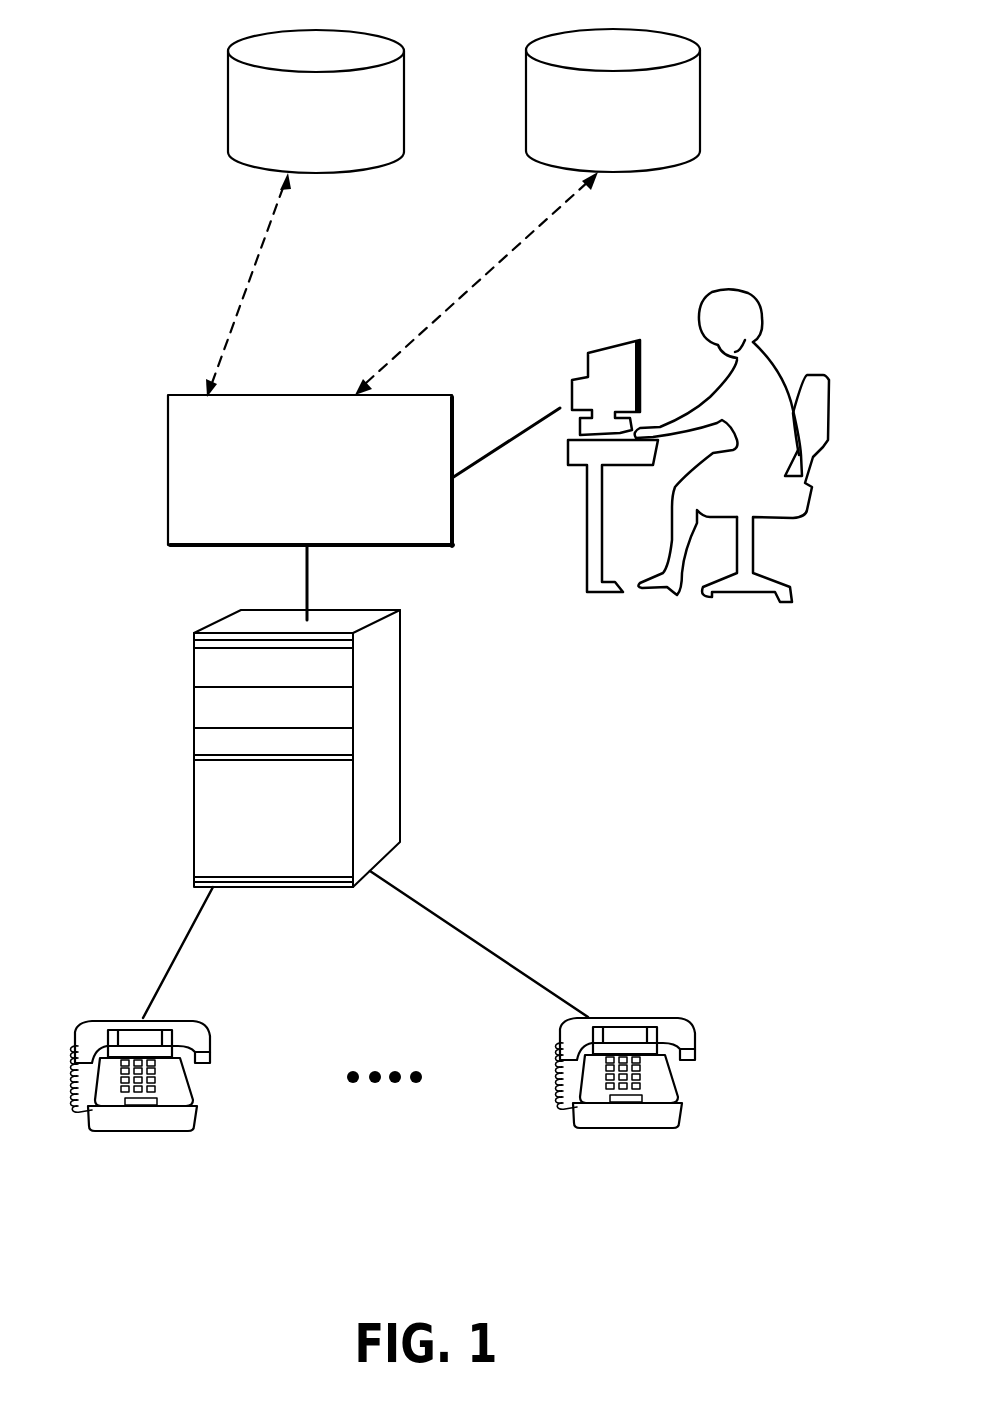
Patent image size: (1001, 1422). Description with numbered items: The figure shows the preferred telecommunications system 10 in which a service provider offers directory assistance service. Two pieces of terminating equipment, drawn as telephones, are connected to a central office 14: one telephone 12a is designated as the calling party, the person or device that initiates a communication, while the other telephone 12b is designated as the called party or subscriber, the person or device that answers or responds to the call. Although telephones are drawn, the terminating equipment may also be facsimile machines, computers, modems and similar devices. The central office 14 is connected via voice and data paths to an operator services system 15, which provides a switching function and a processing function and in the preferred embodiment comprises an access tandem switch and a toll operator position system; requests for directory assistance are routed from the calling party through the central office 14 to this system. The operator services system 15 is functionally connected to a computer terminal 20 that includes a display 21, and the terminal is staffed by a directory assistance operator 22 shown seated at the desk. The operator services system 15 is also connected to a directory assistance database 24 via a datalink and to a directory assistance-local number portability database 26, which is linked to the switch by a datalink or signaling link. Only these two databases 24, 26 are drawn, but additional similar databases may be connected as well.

The telecommunications system 10 is at (68, 50).
The telephone 12a is at (168, 1131).
The telephone 12b is at (653, 1128).
The central office 14 is at (343, 888).
The operator services system (OPSS) 15 is at (388, 546).
The computer terminal 20 is at (641, 342).
The display 21 is at (646, 382).
The directory assistance operator 22 is at (783, 360).
The directory assistance database 24 is at (662, 173).
The directory assistance-local number portability (DA-LNP) database 26 is at (372, 174).